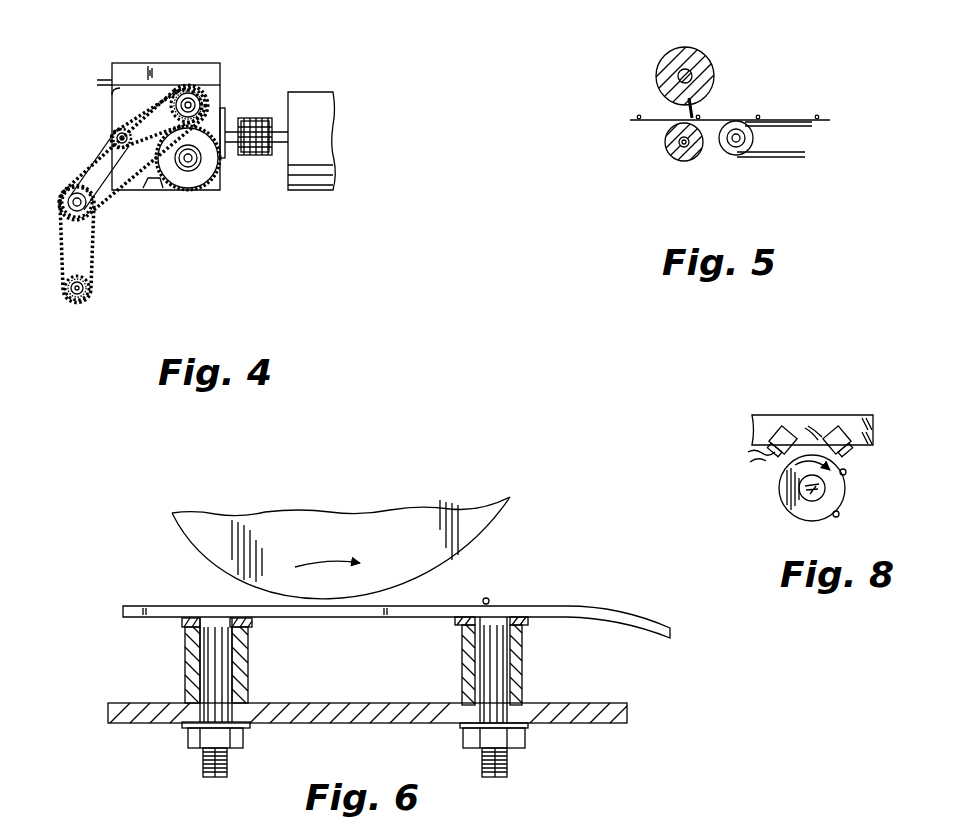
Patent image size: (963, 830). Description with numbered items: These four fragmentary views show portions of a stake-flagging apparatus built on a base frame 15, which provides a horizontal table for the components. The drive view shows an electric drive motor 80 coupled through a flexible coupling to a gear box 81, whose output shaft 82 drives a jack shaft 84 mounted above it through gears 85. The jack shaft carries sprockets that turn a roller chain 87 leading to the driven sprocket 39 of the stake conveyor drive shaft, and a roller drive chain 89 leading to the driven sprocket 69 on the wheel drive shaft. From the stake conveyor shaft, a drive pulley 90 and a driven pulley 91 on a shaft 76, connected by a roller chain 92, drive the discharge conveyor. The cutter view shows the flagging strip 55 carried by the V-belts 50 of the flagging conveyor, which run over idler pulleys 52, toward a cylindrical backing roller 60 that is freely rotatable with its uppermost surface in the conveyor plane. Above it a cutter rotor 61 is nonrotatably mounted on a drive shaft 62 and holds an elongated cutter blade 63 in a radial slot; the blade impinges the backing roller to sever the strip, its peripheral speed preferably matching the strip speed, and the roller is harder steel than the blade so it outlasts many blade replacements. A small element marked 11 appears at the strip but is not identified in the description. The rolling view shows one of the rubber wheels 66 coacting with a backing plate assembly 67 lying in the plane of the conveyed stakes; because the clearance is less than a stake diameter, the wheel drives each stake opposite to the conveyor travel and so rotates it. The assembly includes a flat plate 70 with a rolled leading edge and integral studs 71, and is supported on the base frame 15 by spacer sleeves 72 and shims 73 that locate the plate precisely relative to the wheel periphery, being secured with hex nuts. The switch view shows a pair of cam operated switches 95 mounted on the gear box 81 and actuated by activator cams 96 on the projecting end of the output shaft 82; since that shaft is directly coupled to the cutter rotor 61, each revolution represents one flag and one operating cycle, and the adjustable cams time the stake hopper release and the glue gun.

In FIG. 5, the bead / product line 11 is at (818, 119).
In FIG. 6, the bead / product line 11 is at (485, 598).
In FIG. 6, the base frame 15 is at (322, 712).
In FIG. 4, the driven sprocket 39 is at (88, 210).
In FIG. 5, the V-belts 50 is at (805, 157).
In FIG. 5, the idler pulleys 52 is at (735, 152).
In FIG. 5, the flagging strip 55 is at (652, 122).
In FIG. 5, the backing roller 60 is at (679, 158).
In FIG. 5, the cutter rotor 61 is at (688, 48).
In FIG. 5, the drive shaft 62 is at (678, 76).
In FIG. 5, the cutter blade 63 is at (705, 103).
In FIG. 6, the rubber wheels 66 is at (388, 525).
In FIG. 6, the backing plate assembly 67 is at (560, 558).
In FIG. 4, the driven sprocket 69 is at (113, 136).
In FIG. 6, the flat plate 70 is at (588, 606).
In FIG. 6, the integral studs 71 is at (207, 656).
In FIG. 6, the spacer sleeves 72 is at (243, 670).
In FIG. 6, the shims 73 is at (250, 625).
In FIG. 4, the shaft 76 is at (66, 290).
In FIG. 4, the electric drive motor 80 is at (327, 117).
In FIG. 4, the gear box 81 is at (112, 88).
In FIG. 8, the gear box 81 is at (760, 415).
In FIG. 4, the gear box output shaft 82 is at (187, 167).
In FIG. 8, the gear box output shaft 82 is at (825, 488).
In FIG. 4, the jack shaft 84 is at (207, 102).
In FIG. 4, the gears 85 is at (182, 92).
In FIG. 4, the roller chain 87 is at (90, 165).
In FIG. 4, the roller drive chain 89 is at (147, 112).
In FIG. 4, the drive pulley 90 is at (67, 192).
In FIG. 4, the driven pulley 91 is at (90, 290).
In FIG. 4, the roller chain 92 is at (62, 245).
In FIG. 8, the cam operated switches 95 is at (783, 420).
In FIG. 8, the activator cams 96 is at (790, 487).